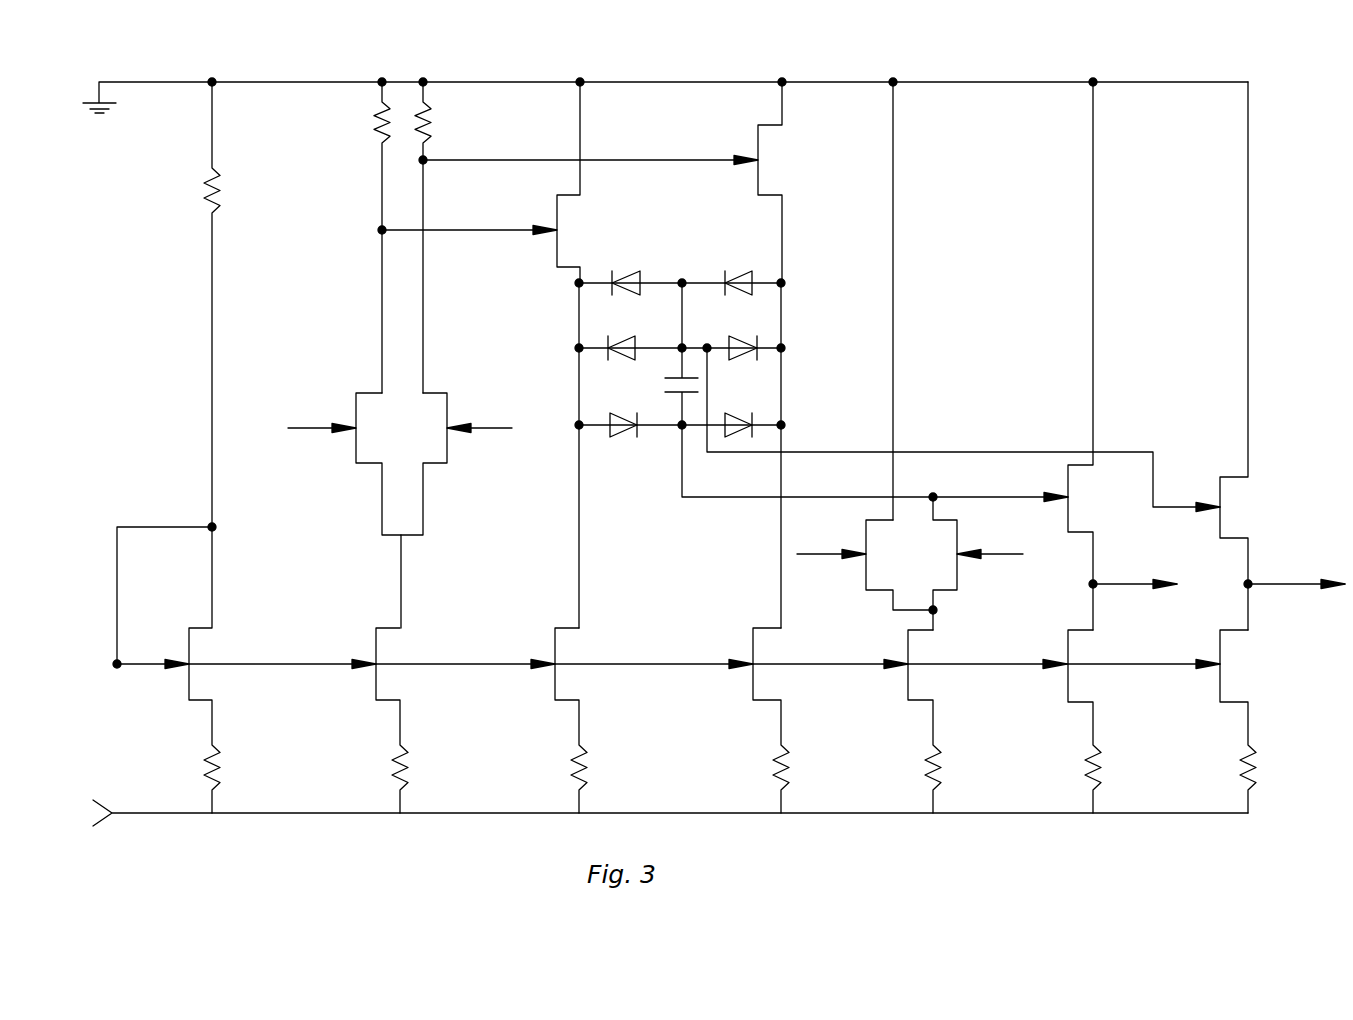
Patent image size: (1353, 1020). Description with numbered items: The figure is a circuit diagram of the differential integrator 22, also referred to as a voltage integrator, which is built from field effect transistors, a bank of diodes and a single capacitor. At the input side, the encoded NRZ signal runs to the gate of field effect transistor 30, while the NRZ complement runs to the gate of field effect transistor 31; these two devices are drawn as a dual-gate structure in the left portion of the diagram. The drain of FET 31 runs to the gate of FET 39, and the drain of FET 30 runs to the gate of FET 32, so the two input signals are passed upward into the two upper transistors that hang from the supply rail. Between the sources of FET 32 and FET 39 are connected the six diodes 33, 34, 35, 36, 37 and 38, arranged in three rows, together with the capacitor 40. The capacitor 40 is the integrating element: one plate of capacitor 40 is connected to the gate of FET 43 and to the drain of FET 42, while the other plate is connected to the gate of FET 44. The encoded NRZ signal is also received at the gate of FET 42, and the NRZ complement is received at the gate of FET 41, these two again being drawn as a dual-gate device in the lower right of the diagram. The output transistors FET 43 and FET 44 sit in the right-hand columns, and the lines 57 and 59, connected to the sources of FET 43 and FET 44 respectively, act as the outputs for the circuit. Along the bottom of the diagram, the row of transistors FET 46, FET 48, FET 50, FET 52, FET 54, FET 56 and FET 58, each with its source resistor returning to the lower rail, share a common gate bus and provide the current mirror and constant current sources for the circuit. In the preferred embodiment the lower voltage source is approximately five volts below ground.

The differential integrator 22 is at (1052, 63).
The field effect transistor 30 is at (356, 397).
The field effect transistor 31 is at (447, 395).
The field effect transistor 32 is at (557, 268).
The diode 33 is at (635, 272).
The diode 34 is at (747, 270).
The diode 35 is at (635, 334).
The diode 36 is at (729, 335).
The diode 37 is at (623, 432).
The diode 38 is at (733, 413).
The field effect transistor 39 is at (758, 135).
The capacitor 40 is at (673, 398).
The field effect transistor 41 is at (866, 590).
The field effect transistor 42 is at (953, 517).
The field effect transistor 43 is at (1068, 465).
The field effect transistor 44 is at (1220, 472).
The field effect transistor 46 is at (189, 627).
The field effect transistor 48 is at (376, 627).
The field effect transistor 50 is at (555, 627).
The field effect transistor 52 is at (753, 627).
The field effect transistor 54 is at (908, 695).
The field effect transistor 56 is at (1067, 702).
The line 57 is at (1127, 587).
The field effect transistor 58 is at (1220, 700).
The line 59 is at (1268, 588).